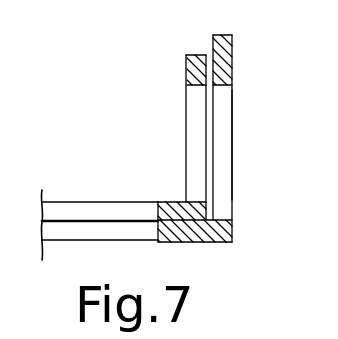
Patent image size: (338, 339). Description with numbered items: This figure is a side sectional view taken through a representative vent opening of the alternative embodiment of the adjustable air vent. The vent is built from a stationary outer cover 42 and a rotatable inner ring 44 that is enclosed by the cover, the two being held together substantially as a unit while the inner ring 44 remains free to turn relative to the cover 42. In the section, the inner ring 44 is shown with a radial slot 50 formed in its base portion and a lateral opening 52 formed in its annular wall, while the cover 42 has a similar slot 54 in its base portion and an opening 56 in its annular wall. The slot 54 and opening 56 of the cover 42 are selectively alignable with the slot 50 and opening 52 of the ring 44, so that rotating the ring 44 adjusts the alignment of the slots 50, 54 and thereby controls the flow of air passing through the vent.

The stationary outer cover 42 is at (233, 38).
The rotatable inner ring 44 is at (186, 70).
The radial slot 50 is at (83, 210).
The lateral opening 52 is at (194, 127).
The slot 54 is at (127, 237).
The opening 56 is at (225, 119).